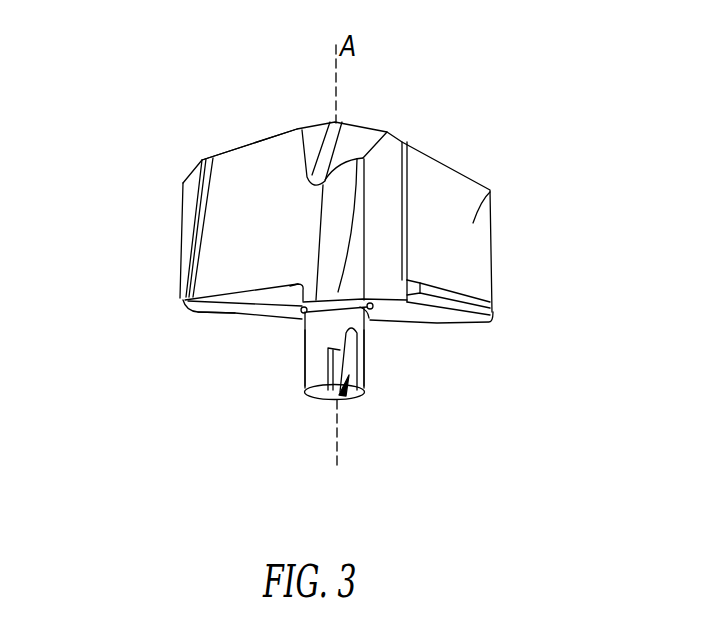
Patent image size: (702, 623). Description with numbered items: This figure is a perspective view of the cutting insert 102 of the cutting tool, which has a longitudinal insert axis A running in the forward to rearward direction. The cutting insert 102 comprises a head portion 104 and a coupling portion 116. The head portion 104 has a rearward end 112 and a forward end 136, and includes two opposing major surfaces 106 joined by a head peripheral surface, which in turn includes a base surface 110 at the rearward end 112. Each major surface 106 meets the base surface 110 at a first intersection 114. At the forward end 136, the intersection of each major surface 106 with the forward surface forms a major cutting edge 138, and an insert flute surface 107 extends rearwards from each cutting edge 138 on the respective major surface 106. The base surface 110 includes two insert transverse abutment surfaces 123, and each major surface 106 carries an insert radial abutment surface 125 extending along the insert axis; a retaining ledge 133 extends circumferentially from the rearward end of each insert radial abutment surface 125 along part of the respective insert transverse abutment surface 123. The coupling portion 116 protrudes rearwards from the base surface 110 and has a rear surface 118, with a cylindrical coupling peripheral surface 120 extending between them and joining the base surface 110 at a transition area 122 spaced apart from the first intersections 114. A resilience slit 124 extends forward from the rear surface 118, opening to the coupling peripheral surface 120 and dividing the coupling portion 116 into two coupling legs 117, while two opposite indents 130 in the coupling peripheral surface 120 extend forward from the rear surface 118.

The cutting insert 102 is at (420, 67).
The head portion 104 is at (497, 130).
The major surface 106 is at (244, 170).
The insert flute surface 107 is at (230, 232).
The base surface 110 is at (222, 301).
The rearward end 112 is at (180, 368).
The first intersection 114 is at (438, 320).
The coupling portion 116 is at (399, 368).
The coupling leg 117 is at (326, 328).
The rear surface 118 is at (345, 393).
The coupling peripheral surface 120 is at (302, 320).
The transition area 122 is at (300, 312).
The insert transverse abutment surface 123 is at (394, 322).
The resilience slit 124 is at (342, 398).
The insert radial abutment surface 125 is at (490, 191).
The indent 130 is at (363, 370).
The retaining ledge 133 is at (476, 297).
The forward end 136 is at (193, 145).
The major cutting edge 138 is at (262, 137).